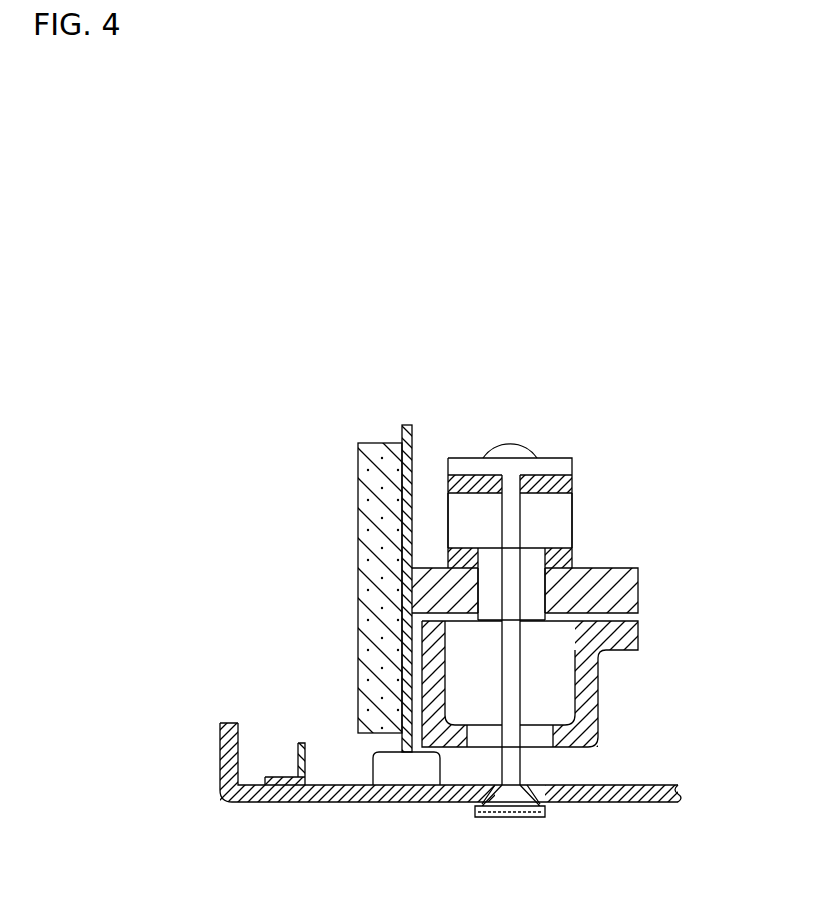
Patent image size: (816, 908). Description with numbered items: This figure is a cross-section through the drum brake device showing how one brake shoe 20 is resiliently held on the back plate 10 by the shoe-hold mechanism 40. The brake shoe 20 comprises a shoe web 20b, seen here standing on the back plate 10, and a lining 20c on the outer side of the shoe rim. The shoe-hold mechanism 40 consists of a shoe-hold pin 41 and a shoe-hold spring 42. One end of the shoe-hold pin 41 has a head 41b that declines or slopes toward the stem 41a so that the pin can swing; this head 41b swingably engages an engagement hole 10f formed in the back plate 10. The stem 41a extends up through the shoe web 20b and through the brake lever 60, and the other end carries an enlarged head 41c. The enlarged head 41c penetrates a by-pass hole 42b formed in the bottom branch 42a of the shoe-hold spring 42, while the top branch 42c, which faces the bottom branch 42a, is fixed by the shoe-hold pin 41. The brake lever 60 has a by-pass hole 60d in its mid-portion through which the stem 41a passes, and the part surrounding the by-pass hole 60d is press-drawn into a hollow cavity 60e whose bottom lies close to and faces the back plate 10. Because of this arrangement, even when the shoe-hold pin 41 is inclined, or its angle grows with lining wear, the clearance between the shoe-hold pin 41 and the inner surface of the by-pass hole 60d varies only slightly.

The back plate 10 is at (331, 804).
The engagement hole 10f is at (494, 817).
The brake shoe 20 is at (403, 425).
The shoe web 20b is at (640, 599).
The lining 20c is at (375, 567).
The shoe-hold mechanism 40 is at (653, 365).
The shoe-hold pin 41 is at (523, 536).
The stem 41a is at (513, 640).
The head 41b is at (531, 818).
The enlarged head 41c is at (510, 452).
The shoe-hold spring 42 is at (568, 457).
The bottom branch 42a is at (569, 561).
The by-pass hole 42b is at (523, 510).
The top branch 42c is at (452, 457).
The brake lever 60 is at (640, 636).
The by-pass hole 60d is at (549, 746).
The hollow cavity 60e is at (555, 670).